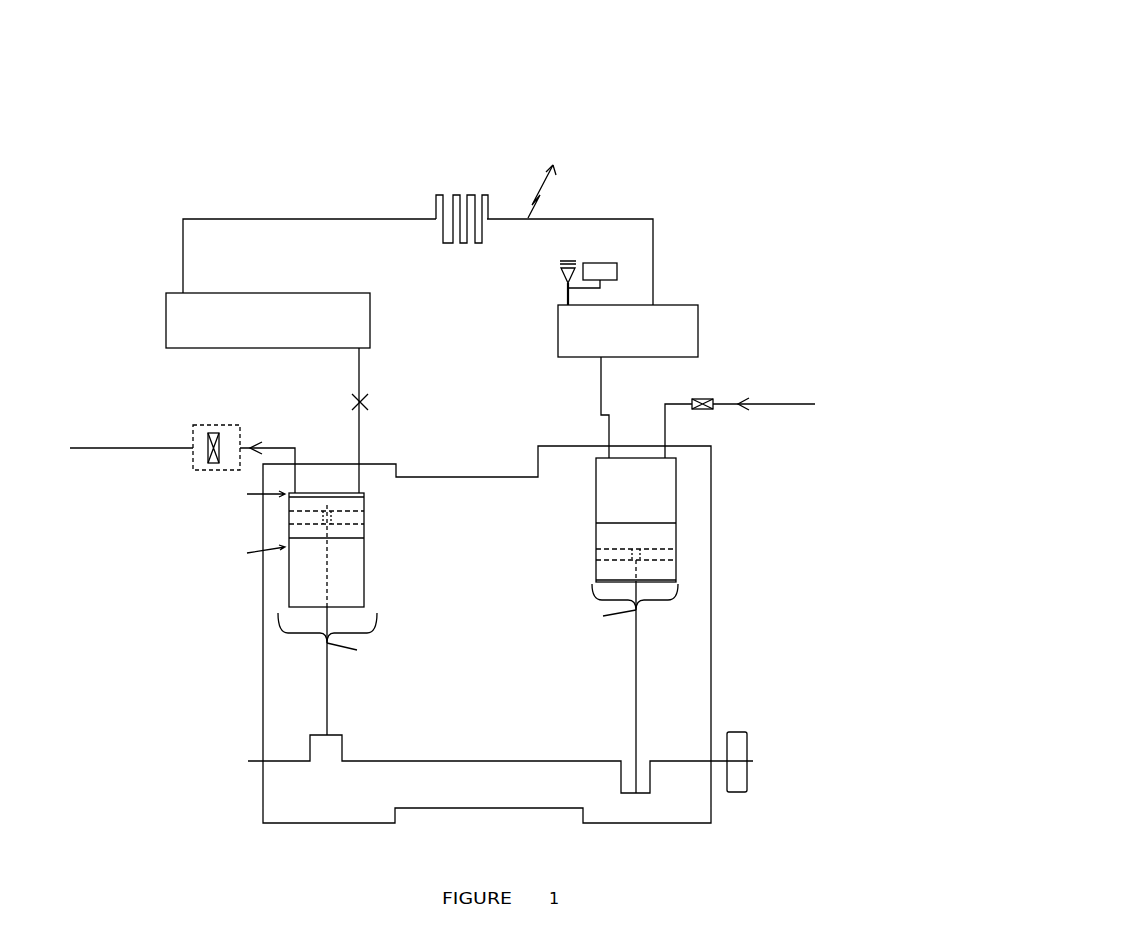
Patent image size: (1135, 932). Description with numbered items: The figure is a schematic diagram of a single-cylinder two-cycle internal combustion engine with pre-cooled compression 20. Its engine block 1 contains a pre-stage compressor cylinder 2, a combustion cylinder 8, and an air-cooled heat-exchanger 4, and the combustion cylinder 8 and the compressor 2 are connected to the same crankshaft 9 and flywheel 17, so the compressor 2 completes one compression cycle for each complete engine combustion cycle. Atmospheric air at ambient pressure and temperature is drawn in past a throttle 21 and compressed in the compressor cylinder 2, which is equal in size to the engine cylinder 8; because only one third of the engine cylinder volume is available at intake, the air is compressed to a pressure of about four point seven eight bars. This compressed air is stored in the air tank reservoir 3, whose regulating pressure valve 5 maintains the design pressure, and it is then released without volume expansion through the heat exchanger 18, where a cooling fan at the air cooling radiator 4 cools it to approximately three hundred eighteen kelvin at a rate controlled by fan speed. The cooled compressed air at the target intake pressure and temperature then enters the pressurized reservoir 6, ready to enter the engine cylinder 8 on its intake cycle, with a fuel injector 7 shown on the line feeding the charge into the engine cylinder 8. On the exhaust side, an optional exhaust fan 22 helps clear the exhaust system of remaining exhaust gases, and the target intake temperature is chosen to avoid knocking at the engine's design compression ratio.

The engine block 1 is at (505, 785).
The pre-stage compressor cylinder 2 is at (655, 509).
The air tank reservoir 3 is at (671, 308).
The air-cooled heat-exchanger 4 is at (487, 197).
The pressure control valve 5 is at (563, 275).
The reservoir pressurized container 6 is at (169, 299).
The fuel injector 7 is at (367, 394).
The combustion cylinder 8 is at (295, 576).
The crankshaft 9 is at (299, 760).
The flywheel 17 is at (745, 733).
The heat exchanger 18 is at (372, 211).
The two-cycle internal combustion engine with pre-cooled compression 20 is at (562, 77).
The throttle 21 is at (705, 400).
The exhaust fan 22 is at (209, 463).